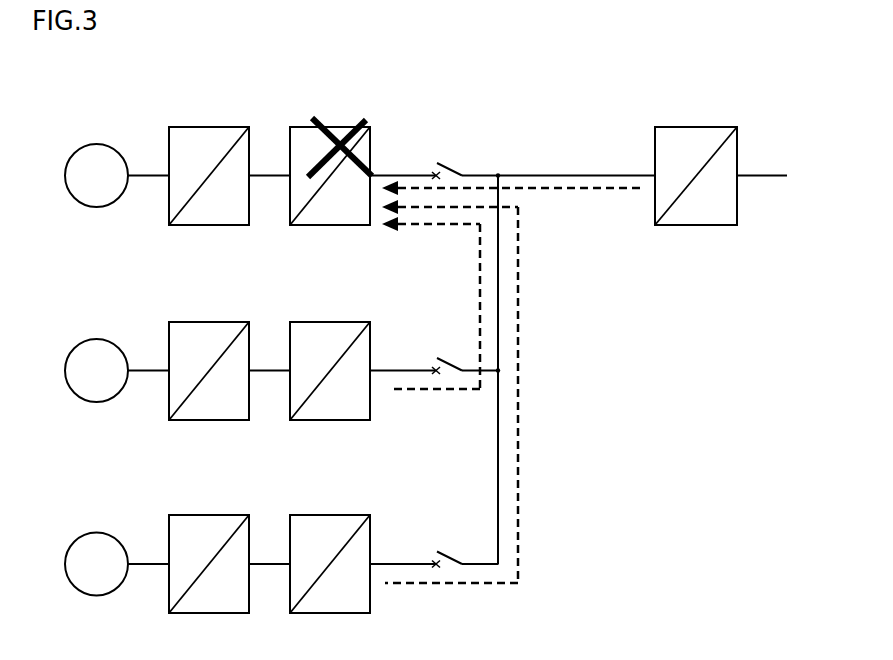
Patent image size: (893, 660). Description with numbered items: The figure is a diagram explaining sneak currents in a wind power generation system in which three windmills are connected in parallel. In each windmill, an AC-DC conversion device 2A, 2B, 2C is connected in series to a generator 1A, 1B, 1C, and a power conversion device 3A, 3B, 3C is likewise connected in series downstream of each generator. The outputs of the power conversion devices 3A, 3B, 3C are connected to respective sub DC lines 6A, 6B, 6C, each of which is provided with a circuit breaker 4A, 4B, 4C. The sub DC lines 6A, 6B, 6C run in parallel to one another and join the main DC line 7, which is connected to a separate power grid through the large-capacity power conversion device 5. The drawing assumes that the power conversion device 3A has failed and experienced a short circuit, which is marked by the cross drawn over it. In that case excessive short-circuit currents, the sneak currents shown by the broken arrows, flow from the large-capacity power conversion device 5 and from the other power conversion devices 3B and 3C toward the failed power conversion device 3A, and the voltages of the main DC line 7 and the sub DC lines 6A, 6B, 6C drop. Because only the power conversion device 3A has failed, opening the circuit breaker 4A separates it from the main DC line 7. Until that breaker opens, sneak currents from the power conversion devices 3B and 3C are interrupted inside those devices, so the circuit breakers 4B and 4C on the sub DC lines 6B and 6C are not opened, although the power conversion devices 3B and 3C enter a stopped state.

The generator 1A is at (102, 145).
The generator 1B is at (102, 340).
The generator 1C is at (102, 533).
The AC-DC conversion device 2A is at (208, 126).
The AC-DC conversion device 2B is at (208, 321).
The AC-DC conversion device 2C is at (208, 514).
The power conversion device 3A is at (334, 126).
The power conversion device 3B is at (334, 321).
The power conversion device 3C is at (334, 514).
The circuit breaker 4A is at (452, 156).
The circuit breaker 4B is at (452, 351).
The circuit breaker 4C is at (452, 544).
The large-capacity power conversion device 5 is at (698, 126).
The sub DC line 6A is at (393, 172).
The sub DC line 6B is at (393, 367).
The sub DC line 6C is at (393, 560).
The main DC line 7 is at (571, 171).